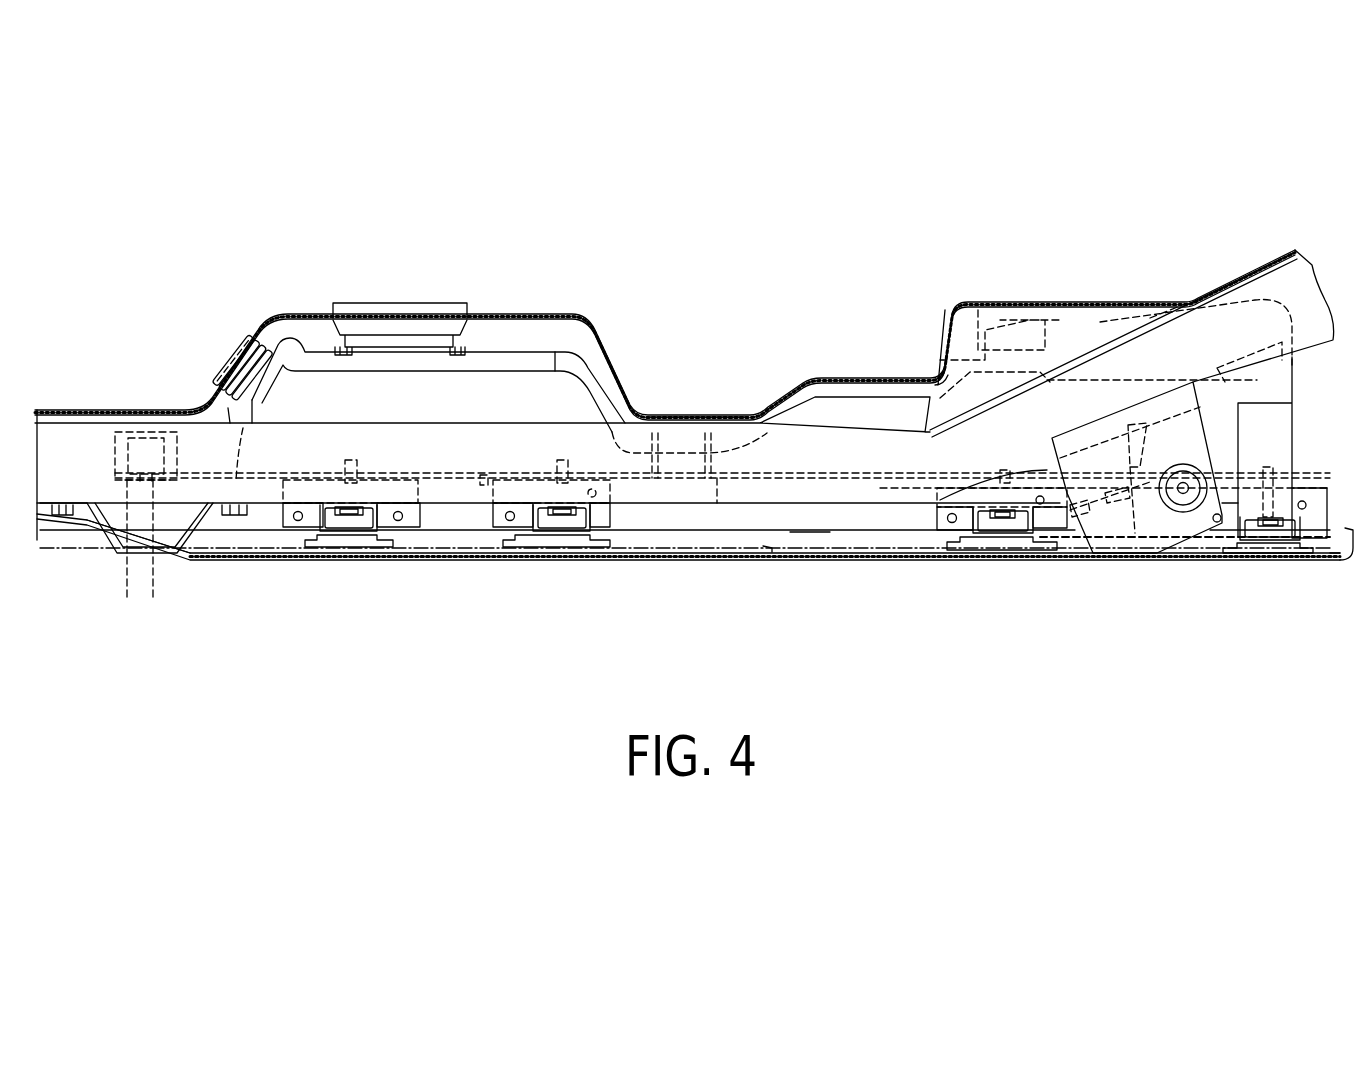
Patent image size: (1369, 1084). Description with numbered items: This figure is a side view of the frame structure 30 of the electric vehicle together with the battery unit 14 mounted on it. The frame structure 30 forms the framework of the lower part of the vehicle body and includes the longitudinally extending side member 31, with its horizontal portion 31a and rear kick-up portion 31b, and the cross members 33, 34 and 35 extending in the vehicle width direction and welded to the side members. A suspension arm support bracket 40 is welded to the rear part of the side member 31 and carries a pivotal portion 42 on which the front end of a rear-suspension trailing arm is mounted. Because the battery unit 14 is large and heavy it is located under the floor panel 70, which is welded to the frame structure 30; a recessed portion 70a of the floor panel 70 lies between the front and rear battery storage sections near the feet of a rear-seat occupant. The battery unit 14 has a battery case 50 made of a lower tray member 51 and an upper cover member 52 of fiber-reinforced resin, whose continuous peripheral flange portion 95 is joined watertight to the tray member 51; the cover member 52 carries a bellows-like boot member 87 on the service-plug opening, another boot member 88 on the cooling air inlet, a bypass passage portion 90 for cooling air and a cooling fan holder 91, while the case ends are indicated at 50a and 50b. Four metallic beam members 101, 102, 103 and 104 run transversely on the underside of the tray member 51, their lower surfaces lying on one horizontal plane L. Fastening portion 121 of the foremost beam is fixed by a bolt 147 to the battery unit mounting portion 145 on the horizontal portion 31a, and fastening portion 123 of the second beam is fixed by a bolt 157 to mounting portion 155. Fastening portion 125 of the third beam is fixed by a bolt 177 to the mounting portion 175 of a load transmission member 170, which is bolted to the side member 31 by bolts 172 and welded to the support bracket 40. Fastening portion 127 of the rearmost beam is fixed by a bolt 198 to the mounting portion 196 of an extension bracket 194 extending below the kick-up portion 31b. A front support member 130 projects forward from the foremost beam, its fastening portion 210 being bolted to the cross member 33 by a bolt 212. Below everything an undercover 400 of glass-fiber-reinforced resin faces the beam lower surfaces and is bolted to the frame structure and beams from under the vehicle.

The battery unit 14 is at (443, 558).
The frame structure 30 is at (1320, 356).
The side member 31 is at (855, 493).
The horizontal portion 31a is at (670, 505).
The kick-up portion 31b is at (1120, 355).
The cross member 33 is at (178, 550).
The cross member 34 is at (717, 503).
The cross member 35 is at (980, 300).
The suspension arm support bracket 40 is at (1122, 520).
The pivotal portion 42 is at (1183, 494).
The battery case 50 is at (866, 380).
The front end of seat cushion frame 50a is at (203, 550).
The rear end of seat cushion frame 50b is at (1338, 553).
The tray member 51 is at (808, 525).
The cover member 52 is at (583, 400).
The floor panel 70 is at (600, 340).
The recessed portion 70a is at (727, 413).
The boot member 87 is at (467, 333).
The boot member 88 is at (260, 333).
The bypass passage portion 90 is at (557, 360).
The cooling fan holder 91 is at (1160, 315).
The flange portion 95 is at (772, 473).
The beam member 101 is at (305, 547).
The beam member 102 is at (510, 550).
The beam member 103 is at (960, 553).
The beam member 104 is at (1230, 553).
The fastening portion 121 is at (368, 505).
The fastening portion 123 is at (545, 505).
The fastening portion 125 is at (990, 502).
The fastening portion 127 is at (1280, 505).
The front support member 130 is at (107, 545).
The battery unit mounting portion 145 is at (330, 505).
The bolt 147 is at (350, 520).
The battery unit mounting portion 155 is at (600, 505).
The bolt 157 is at (552, 525).
The load transmission member 170 is at (1057, 490).
The bolt 172 is at (1072, 530).
The battery unit mounting portion 175 is at (1018, 540).
The bolt 177 is at (1003, 522).
The extension bracket 194 is at (1263, 438).
The battery unit mounting portion 196 is at (1255, 535).
The bolt 198 is at (1270, 528).
The fastening portion 210 is at (127, 423).
The bolt 212 is at (151, 551).
The undercover 400 is at (610, 576).
The plane L is at (775, 552).